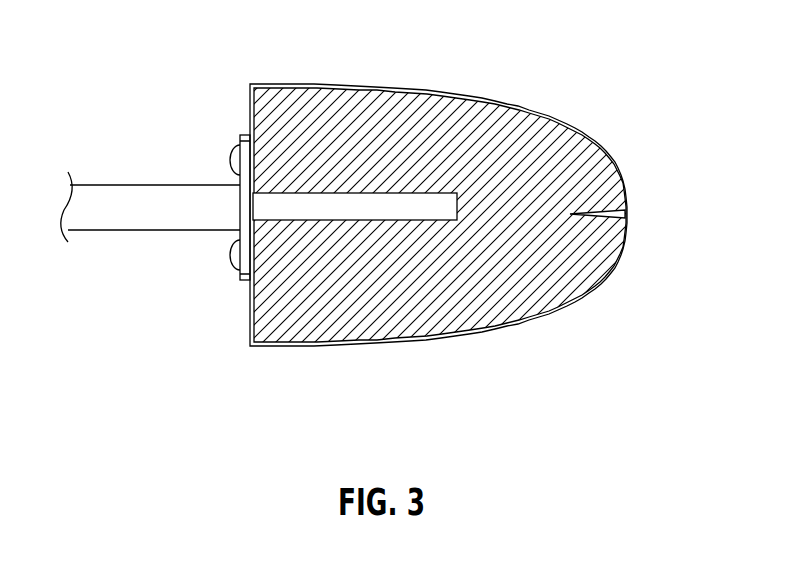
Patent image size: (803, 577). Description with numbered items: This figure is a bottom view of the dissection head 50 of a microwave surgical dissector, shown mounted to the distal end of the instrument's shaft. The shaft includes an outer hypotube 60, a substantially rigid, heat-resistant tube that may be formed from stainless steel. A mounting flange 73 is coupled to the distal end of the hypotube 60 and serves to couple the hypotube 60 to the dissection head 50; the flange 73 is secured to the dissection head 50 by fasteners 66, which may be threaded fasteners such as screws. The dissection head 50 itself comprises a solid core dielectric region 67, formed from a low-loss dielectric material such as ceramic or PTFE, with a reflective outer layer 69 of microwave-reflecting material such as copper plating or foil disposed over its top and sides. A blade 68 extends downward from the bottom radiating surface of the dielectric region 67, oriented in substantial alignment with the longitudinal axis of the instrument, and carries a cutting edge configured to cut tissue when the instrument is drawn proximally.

The dissection head 50 is at (401, 227).
The outer hypotube 60 is at (108, 231).
The fasteners 66 is at (230, 157).
The solid core dielectric region 67 is at (388, 318).
The blade 68 is at (618, 200).
The reflective outer layer 69 is at (295, 347).
The mounting flange 73 is at (246, 135).